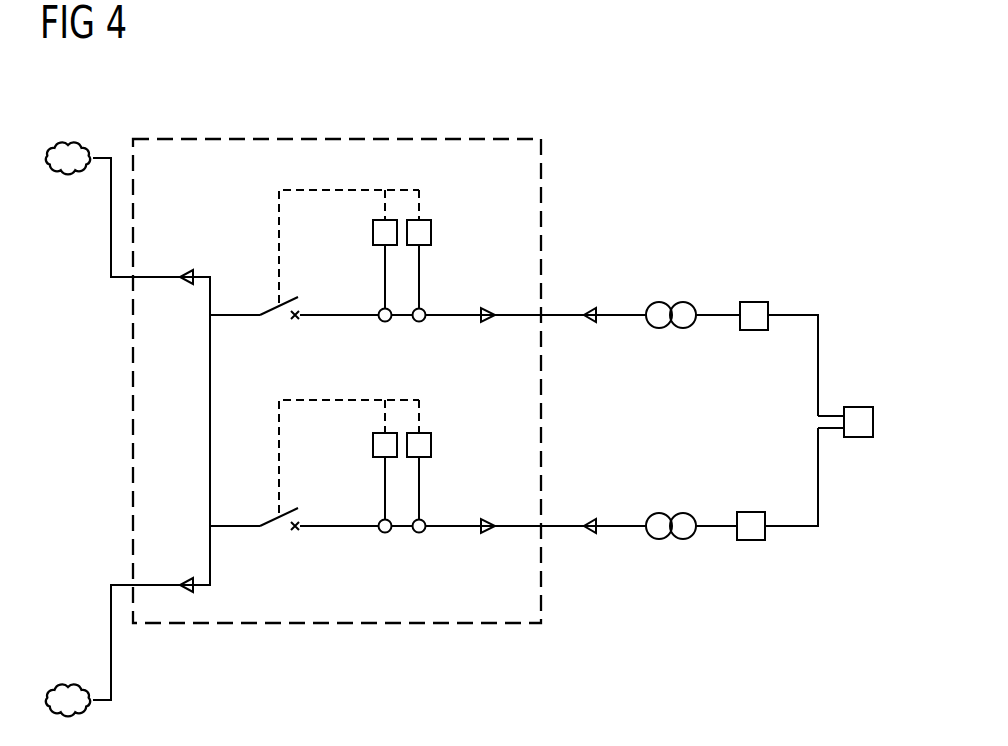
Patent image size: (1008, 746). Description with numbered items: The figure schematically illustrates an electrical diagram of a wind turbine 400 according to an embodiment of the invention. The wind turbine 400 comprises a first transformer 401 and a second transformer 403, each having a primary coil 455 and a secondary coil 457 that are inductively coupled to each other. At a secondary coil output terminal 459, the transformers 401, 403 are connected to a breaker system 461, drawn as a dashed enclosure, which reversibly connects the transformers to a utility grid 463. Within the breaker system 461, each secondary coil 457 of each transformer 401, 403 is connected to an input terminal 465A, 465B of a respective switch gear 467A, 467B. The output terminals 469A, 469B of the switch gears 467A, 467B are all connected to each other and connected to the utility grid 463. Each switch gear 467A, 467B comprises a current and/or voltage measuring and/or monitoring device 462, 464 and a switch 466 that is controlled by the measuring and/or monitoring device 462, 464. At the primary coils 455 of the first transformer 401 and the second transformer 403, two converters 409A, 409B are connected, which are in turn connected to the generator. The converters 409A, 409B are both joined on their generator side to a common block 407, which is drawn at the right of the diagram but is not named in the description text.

The wind turbine 400 is at (696, 163).
The first transformer 401 is at (724, 287).
The second transformer 403 is at (724, 499).
The load / wind turbine 407 is at (858, 406).
The converter 409A is at (754, 331).
The converter 409B is at (751, 541).
The primary coil 455 is at (683, 302).
The secondary coil 457 is at (658, 302).
The secondary coil output terminal 459 is at (589, 307).
The breaker system 461 is at (340, 138).
The current and/or voltage measuring and/or monitoring device 462 is at (373, 232).
The utility grid 463 is at (68, 140).
The current and/or voltage measuring and/or monitoring device 464 is at (431, 232).
The input terminal 465A is at (489, 307).
The input terminal 465B is at (489, 518).
The switch 466 is at (277, 306).
The switch gear 467A is at (446, 198).
The switch gear 467B is at (446, 408).
The output terminal 469A is at (182, 266).
The output terminal 469B is at (182, 576).